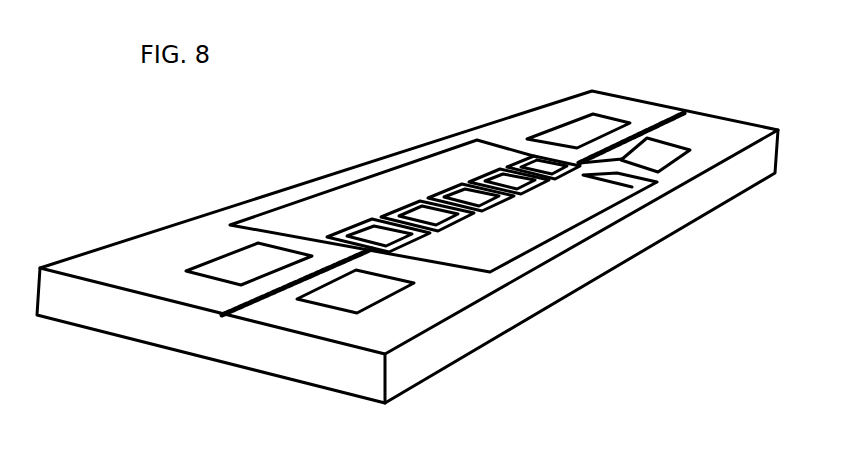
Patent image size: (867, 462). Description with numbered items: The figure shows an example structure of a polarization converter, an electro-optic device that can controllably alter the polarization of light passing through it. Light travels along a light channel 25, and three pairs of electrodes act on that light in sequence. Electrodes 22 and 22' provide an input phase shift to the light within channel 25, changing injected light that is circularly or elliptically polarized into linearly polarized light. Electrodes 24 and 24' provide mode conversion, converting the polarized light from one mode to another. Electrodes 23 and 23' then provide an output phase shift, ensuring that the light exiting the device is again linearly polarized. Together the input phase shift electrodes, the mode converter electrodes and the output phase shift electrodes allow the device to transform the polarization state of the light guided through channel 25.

The electrode 22 is at (227, 240).
The electrode 22' is at (390, 344).
The electrode 23 is at (443, 199).
The electrode 23' is at (506, 221).
The electrode 24 is at (558, 114).
The electrode 24' is at (688, 191).
The light channel 25 is at (222, 318).